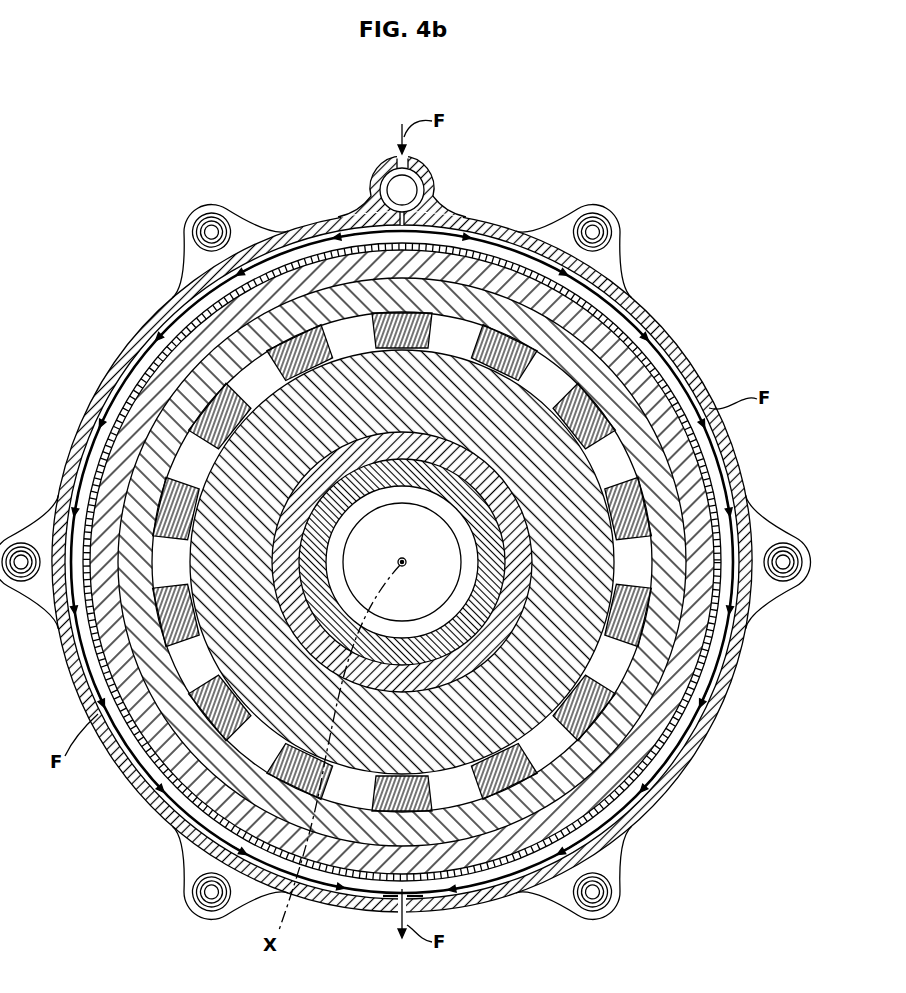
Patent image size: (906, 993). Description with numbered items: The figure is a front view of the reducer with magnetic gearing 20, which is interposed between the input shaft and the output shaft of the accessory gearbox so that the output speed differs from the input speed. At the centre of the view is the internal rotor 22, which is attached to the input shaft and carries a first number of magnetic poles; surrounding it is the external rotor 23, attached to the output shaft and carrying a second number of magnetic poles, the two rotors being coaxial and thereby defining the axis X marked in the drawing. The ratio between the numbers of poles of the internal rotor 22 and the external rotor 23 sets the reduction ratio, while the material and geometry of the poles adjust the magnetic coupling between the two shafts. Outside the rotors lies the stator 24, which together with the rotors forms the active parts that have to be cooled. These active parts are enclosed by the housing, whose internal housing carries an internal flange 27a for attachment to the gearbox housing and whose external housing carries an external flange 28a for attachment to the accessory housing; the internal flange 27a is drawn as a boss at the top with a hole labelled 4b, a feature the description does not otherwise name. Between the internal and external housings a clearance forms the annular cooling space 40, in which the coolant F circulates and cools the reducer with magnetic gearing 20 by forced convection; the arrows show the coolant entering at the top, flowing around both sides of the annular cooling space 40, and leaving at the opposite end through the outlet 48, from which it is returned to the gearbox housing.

The reducer with magnetic gearing 20 is at (722, 242).
The internal rotor 22 is at (514, 554).
The external rotor 23 is at (562, 483).
The stator 24 is at (586, 411).
The internal flange 27a is at (373, 197).
The bore 4b is at (406, 217).
The external flange 28a is at (779, 598).
The cooling space 40 is at (691, 739).
The outlet 48 is at (393, 922).